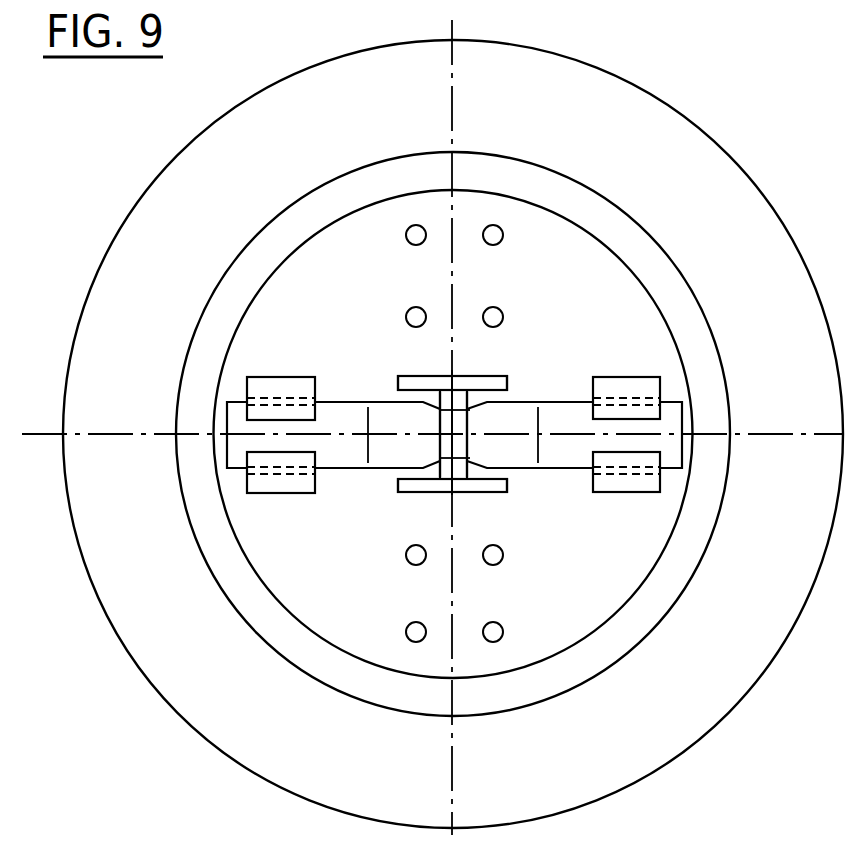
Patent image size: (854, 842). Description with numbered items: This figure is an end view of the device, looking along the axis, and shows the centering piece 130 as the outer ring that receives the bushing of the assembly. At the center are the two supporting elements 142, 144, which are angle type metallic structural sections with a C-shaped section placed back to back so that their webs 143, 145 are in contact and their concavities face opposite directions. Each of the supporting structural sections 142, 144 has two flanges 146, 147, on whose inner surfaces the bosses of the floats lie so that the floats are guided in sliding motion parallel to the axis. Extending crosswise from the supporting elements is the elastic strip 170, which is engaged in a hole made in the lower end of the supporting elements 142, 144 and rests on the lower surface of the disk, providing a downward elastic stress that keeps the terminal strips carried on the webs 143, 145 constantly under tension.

The centering piece 130 is at (272, 737).
The supporting element 142 is at (410, 513).
The web 143 is at (390, 389).
The supporting element 144 is at (464, 514).
The web 145 is at (586, 334).
The flange 146 is at (365, 522).
The flange 147 is at (542, 533).
The elastic strip 170 is at (563, 413).